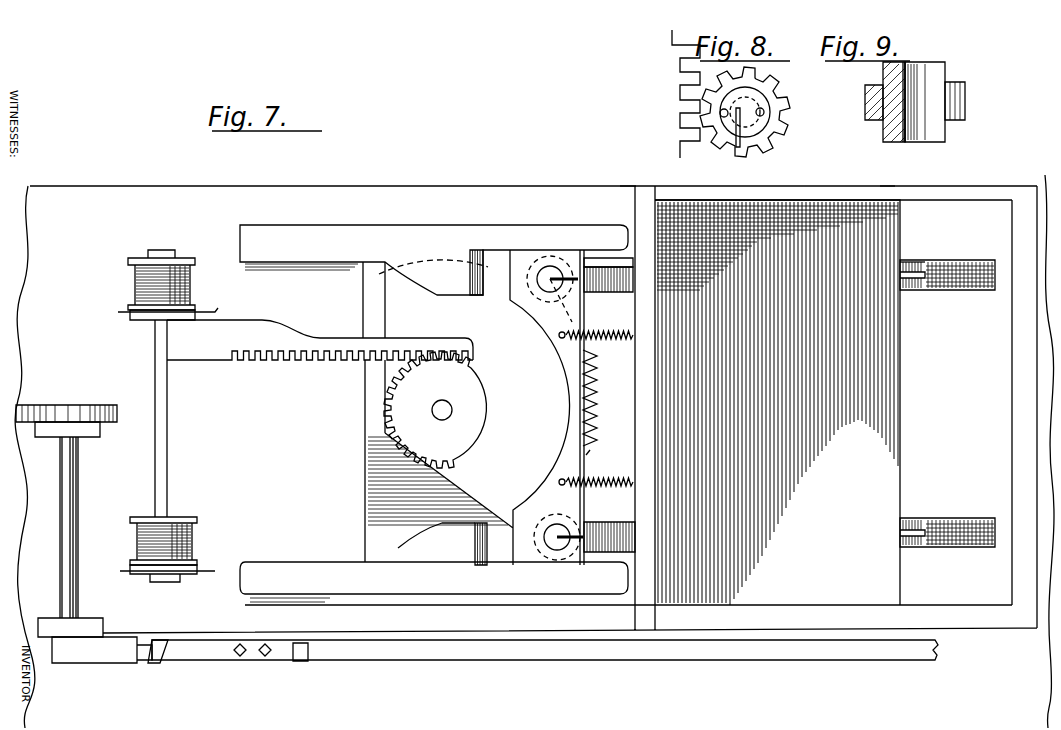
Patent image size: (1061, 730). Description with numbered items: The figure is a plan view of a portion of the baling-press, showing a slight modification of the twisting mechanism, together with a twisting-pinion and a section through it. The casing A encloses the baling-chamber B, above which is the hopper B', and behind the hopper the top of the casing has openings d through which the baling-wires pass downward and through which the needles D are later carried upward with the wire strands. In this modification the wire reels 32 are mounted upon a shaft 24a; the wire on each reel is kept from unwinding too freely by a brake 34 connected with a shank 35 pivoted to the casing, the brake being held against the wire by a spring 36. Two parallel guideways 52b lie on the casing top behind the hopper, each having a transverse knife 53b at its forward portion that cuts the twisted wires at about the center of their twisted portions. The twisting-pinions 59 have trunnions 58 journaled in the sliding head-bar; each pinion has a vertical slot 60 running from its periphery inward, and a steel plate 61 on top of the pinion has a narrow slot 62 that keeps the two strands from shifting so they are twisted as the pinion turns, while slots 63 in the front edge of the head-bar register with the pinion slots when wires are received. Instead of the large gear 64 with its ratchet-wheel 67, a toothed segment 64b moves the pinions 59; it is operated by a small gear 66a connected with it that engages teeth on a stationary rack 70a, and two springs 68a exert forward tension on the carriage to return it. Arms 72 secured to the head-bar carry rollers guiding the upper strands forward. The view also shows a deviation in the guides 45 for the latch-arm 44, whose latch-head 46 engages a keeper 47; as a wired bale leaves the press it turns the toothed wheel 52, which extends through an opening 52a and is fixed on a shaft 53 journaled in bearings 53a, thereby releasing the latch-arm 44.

In FIG. 7, the shaft 24a is at (168, 430).
In FIG. 7, the reel 32 is at (188, 284).
In FIG. 7, the brake 34 is at (188, 316).
In FIG. 7, the shank 35 is at (218, 309).
In FIG. 7, the spring 36 is at (588, 455).
In FIG. 7, the latch-arm 44 is at (590, 661).
In FIG. 8, the guide 45 is at (683, 66).
In FIG. 7, the latch-head 46 is at (120, 665).
In FIG. 7, the keeper 47 is at (162, 642).
In FIG. 7, the toothed wheel 52 is at (100, 405).
In FIG. 7, the opening 52a is at (22, 408).
In FIG. 7, the guide-strip or guideway 52b is at (434, 413).
In FIG. 7, the shaft 53 is at (430, 522).
In FIG. 7, the bearing 53a is at (48, 437).
In FIG. 7, the knife 53b is at (470, 268).
In FIG. 9, the trunnion 58 is at (884, 130).
In FIG. 7, the twisting-pinion 59 is at (560, 262).
In FIG. 8, the twisting-pinion 59 is at (760, 92).
In FIG. 9, the twisting-pinion 59 is at (876, 86).
In FIG. 9, the slot 60 is at (925, 92).
In FIG. 7, the steel plate 61 is at (540, 275).
In FIG. 8, the steel plate 61 is at (780, 146).
In FIG. 9, the steel plate 61 is at (905, 64).
In FIG. 7, the slot 62 is at (556, 292).
In FIG. 8, the slot 62 is at (738, 148).
In FIG. 9, the slot 62 is at (940, 64).
In FIG. 8, the slot 63 is at (733, 128).
In FIG. 7, the large gear 64 is at (592, 410).
In FIG. 7, the toothed segment 64b is at (467, 407).
In FIG. 7, the small gear 66a is at (437, 410).
In FIG. 7, the ratchet-wheel 67 is at (553, 522).
In FIG. 7, the spring 68a is at (606, 330).
In FIG. 7, the stationary rack 70a is at (363, 320).
In FIG. 7, the arm 72 is at (966, 260).
In FIG. 7, the casing A is at (627, 169).
In FIG. 7, the baling-chamber B is at (777, 402).
In FIG. 7, the hopper B' is at (878, 171).
In FIG. 7, the needle D is at (900, 262).
In FIG. 7, the opening d is at (945, 448).